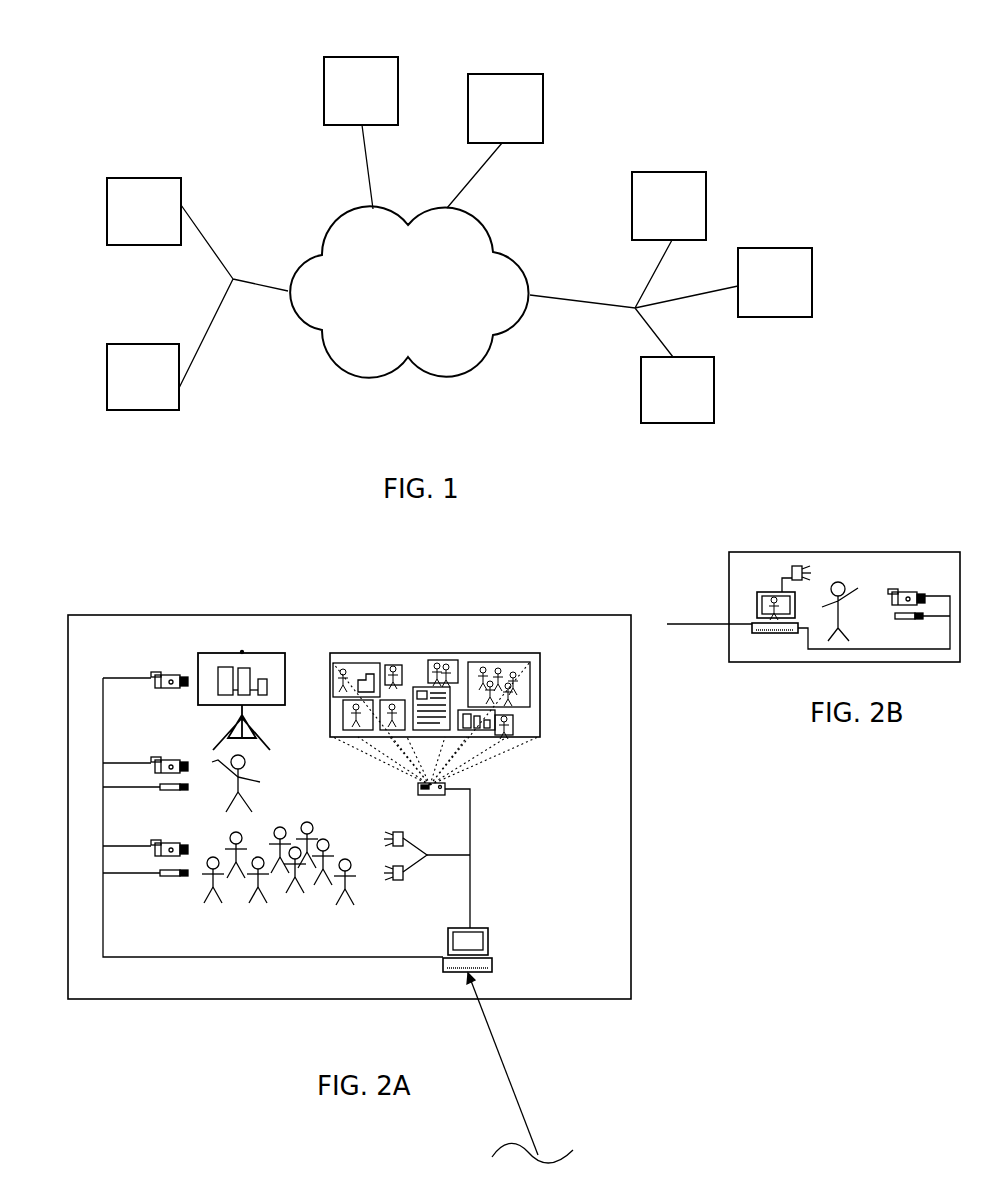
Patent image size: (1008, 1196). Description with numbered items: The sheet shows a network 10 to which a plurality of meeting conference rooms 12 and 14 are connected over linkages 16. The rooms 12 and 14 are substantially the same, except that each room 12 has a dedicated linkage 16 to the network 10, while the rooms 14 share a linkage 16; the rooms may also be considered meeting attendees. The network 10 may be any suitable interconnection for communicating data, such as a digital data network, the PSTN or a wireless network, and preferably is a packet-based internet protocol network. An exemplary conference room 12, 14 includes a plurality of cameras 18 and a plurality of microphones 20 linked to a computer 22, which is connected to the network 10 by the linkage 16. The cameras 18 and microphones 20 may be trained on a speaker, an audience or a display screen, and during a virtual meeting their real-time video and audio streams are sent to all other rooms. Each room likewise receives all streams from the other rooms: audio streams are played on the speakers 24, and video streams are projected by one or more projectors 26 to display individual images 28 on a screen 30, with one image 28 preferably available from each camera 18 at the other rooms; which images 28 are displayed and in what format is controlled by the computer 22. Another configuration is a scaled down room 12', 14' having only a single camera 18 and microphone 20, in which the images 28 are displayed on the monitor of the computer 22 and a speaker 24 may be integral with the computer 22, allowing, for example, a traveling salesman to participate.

In FIG. 1, the network 10 is at (353, 247).
In FIG. 1, the conference room 12 is at (393, 88).
In FIG. 2A, the conference room 12 is at (349, 780).
In FIG. 1, the conference room 14 is at (454, 281).
In FIG. 2A, the conference room 14 is at (349, 807).
In FIG. 1, the linkage 16 is at (270, 290).
In FIG. 2A, the linkage 16 is at (513, 1085).
In FIG. 2A, the camera 18 is at (160, 678).
In FIG. 2B, the camera 18 is at (908, 592).
In FIG. 2A, the microphone 20 is at (162, 785).
In FIG. 2B, the microphone 20 is at (905, 620).
In FIG. 2A, the computer 22 is at (492, 965).
In FIG. 2B, the computer 22 is at (757, 605).
In FIG. 2A, the speaker 24 is at (391, 832).
In FIG. 2B, the speaker 24 is at (792, 566).
In FIG. 2A, the projector 26 is at (445, 795).
In FIG. 2A, the individual image 28 is at (393, 668).
In FIG. 2A, the screen 30 is at (457, 680).
In FIG. 2B, the scaled down room 12' is at (844, 552).
In FIG. 2B, the scaled down room 14' is at (844, 607).